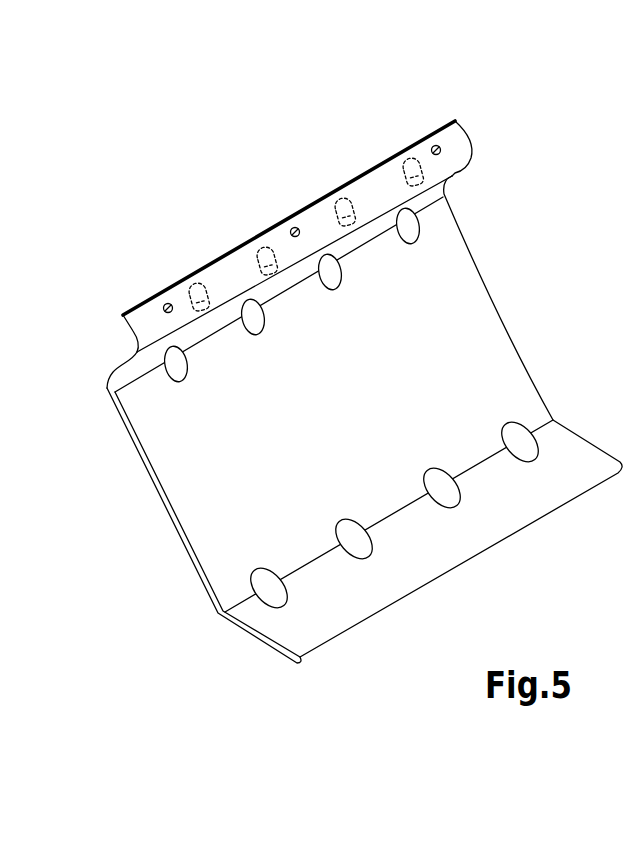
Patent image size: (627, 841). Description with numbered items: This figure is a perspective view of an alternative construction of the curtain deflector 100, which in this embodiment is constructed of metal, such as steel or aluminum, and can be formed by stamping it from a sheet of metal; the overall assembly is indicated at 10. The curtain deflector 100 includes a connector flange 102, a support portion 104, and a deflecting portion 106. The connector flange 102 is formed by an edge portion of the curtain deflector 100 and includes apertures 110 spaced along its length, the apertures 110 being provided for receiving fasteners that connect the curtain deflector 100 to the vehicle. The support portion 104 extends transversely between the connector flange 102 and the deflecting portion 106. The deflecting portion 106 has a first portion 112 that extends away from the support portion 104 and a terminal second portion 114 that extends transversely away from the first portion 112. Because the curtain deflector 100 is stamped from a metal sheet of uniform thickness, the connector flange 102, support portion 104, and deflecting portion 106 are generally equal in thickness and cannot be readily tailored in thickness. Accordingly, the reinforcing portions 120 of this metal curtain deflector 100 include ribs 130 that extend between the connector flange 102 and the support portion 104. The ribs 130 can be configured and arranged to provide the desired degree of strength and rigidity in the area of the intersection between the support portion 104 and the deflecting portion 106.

The assembly 10 is at (164, 662).
The curtain deflector 100 is at (318, 426).
The connector flange 102 is at (180, 292).
The support portion 104 is at (120, 363).
The deflecting portion 106 is at (203, 485).
The apertures 110 is at (163, 305).
The first portion 112 is at (172, 440).
The terminal second portion 114 is at (340, 602).
The reinforcing portions 120 is at (349, 346).
The ribs 130 is at (198, 287).